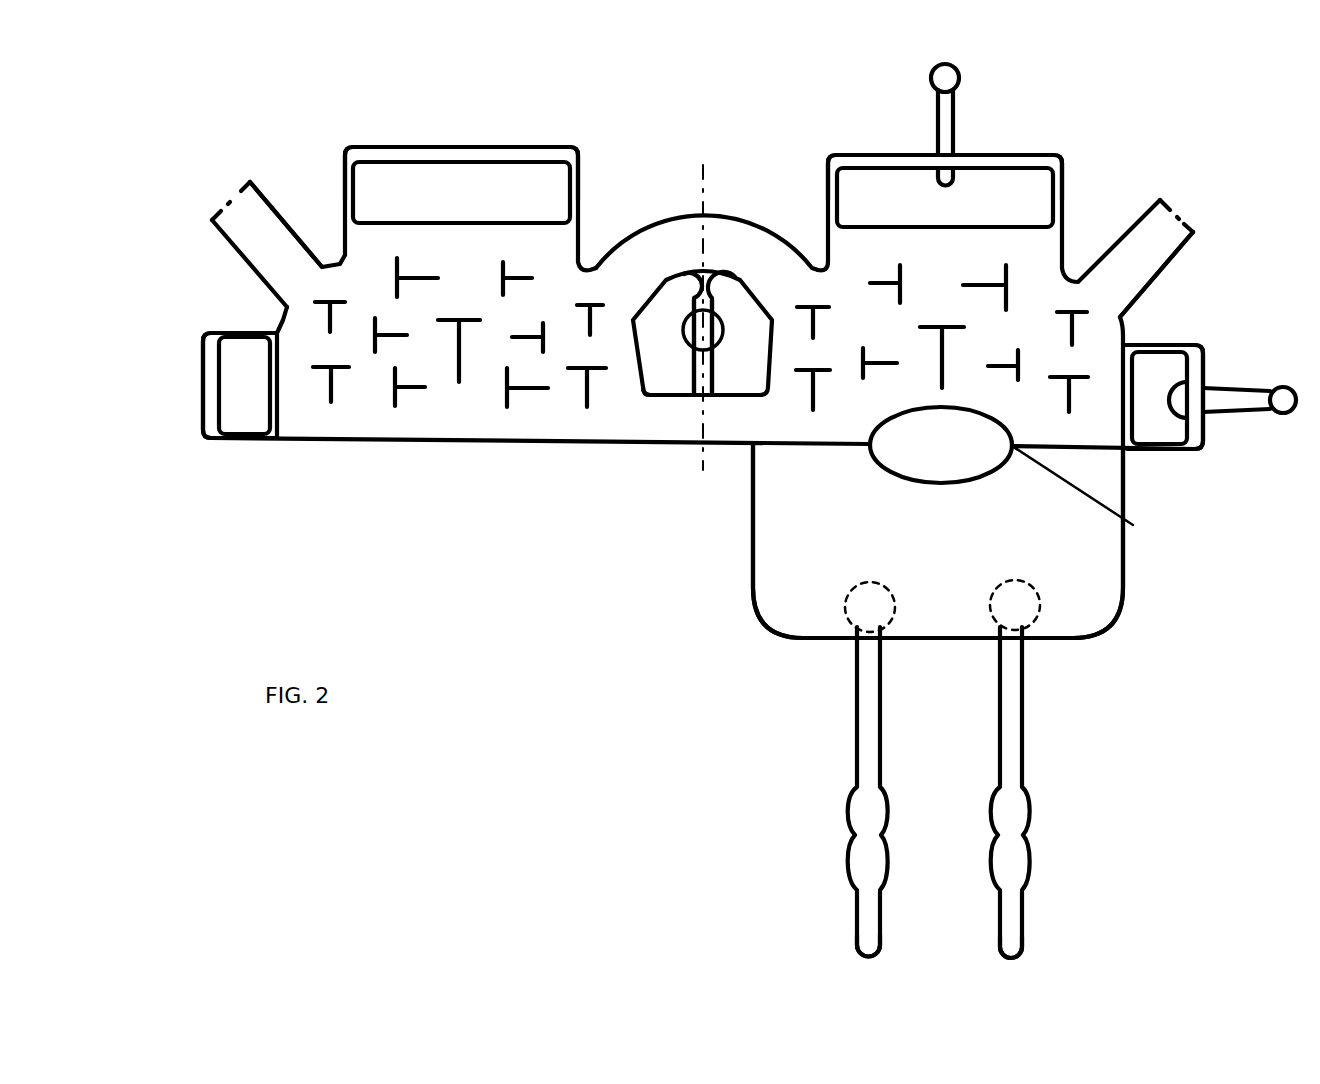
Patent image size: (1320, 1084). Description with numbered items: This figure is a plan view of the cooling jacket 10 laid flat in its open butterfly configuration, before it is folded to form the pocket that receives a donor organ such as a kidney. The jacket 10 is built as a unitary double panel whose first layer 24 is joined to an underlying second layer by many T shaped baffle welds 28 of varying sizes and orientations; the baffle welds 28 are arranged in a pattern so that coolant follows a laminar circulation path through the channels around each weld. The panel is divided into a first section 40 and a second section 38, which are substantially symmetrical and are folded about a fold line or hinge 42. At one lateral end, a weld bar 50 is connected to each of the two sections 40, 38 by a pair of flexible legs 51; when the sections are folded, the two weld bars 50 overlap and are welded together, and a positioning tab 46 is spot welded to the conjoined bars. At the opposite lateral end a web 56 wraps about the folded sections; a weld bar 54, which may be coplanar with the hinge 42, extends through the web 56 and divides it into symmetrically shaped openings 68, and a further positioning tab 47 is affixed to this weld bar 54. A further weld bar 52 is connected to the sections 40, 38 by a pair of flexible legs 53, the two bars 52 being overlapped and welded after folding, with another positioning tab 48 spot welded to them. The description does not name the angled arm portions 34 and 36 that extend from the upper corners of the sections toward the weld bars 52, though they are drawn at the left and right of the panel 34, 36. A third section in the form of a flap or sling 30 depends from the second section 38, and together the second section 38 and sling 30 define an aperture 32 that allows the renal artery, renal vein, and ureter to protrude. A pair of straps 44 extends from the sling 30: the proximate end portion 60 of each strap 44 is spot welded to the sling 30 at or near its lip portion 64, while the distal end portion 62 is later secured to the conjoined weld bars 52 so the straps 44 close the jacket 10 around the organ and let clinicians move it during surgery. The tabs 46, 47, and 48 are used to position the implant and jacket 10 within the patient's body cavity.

The jacket 10 is at (668, 112).
The first layer 24 is at (467, 412).
The T shaped baffle welds 28 is at (331, 396).
The sling 30 is at (1095, 607).
The aperture 32 is at (877, 463).
The right arm 34 is at (1180, 232).
The left arm 36 is at (240, 238).
The second section 38 is at (1045, 258).
The first section 40 is at (332, 198).
The hinge 42 is at (707, 153).
The straps 44 is at (857, 767).
The positioning tab 46 is at (1245, 405).
The positioning tab 47 is at (682, 372).
The positioning tab 48 is at (950, 113).
The weld bar 50 is at (205, 400).
The flexible legs 51 is at (236, 332).
The weld bar 52 is at (496, 157).
The flexible legs 53 is at (357, 183).
The weld bar 54 is at (673, 278).
The web 56 is at (757, 287).
The proximate end portion 60 is at (882, 602).
The distal end portion 62 is at (1007, 922).
The lip portion 64 is at (828, 633).
The openings 68 is at (723, 368).